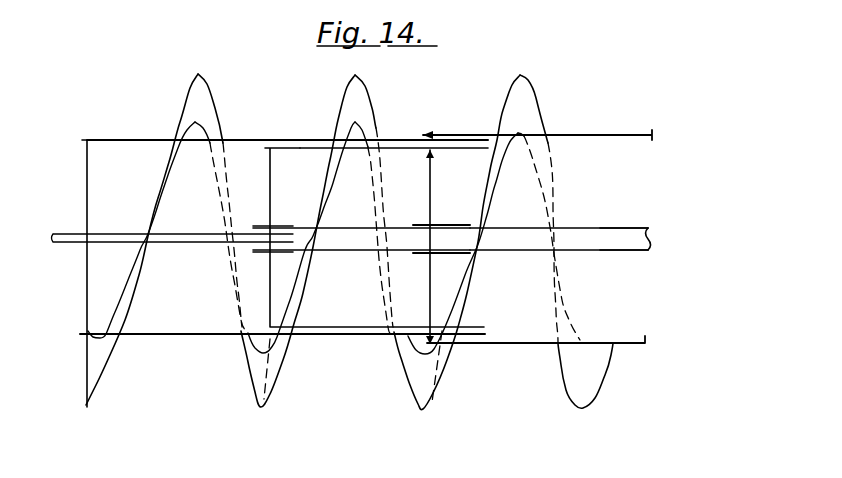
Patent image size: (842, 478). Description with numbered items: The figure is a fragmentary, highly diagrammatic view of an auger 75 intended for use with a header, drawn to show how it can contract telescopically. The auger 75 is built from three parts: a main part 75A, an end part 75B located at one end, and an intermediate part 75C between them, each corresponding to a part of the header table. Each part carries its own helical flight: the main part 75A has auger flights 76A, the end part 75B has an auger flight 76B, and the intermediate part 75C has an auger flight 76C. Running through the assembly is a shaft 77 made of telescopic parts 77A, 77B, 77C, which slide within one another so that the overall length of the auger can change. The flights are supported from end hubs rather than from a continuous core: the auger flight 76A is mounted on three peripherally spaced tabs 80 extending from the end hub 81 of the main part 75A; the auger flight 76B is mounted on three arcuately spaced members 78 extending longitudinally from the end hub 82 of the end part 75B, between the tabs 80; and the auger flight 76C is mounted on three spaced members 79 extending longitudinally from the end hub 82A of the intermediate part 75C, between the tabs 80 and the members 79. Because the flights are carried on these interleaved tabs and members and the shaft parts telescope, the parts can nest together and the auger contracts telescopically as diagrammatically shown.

The auger 75 is at (273, 104).
The main part 75A is at (600, 134).
The end part 75B is at (147, 138).
The intermediate part 75C is at (419, 157).
The auger flight 76A is at (532, 87).
The auger flight 76B is at (197, 75).
The auger flight 76C is at (362, 85).
The shaft 77 is at (652, 226).
The telescopic shaft part 77A is at (583, 227).
The telescopic shaft part 77B is at (207, 243).
The telescopic shaft part 77C is at (333, 246).
The arcuately spaced members 78 is at (102, 138).
The spaced members 79 is at (357, 150).
The tabs 80 is at (570, 136).
The end hub 81 is at (432, 205).
The end hub 82 is at (86, 193).
The end hub 82A is at (271, 206).